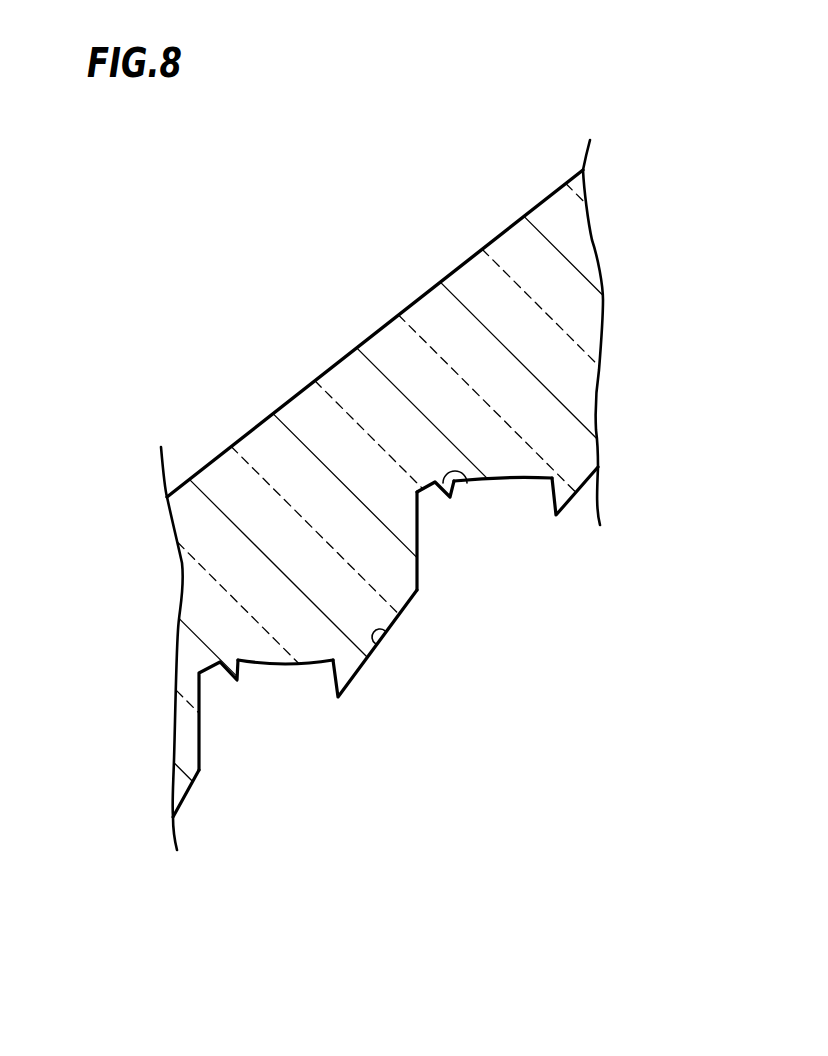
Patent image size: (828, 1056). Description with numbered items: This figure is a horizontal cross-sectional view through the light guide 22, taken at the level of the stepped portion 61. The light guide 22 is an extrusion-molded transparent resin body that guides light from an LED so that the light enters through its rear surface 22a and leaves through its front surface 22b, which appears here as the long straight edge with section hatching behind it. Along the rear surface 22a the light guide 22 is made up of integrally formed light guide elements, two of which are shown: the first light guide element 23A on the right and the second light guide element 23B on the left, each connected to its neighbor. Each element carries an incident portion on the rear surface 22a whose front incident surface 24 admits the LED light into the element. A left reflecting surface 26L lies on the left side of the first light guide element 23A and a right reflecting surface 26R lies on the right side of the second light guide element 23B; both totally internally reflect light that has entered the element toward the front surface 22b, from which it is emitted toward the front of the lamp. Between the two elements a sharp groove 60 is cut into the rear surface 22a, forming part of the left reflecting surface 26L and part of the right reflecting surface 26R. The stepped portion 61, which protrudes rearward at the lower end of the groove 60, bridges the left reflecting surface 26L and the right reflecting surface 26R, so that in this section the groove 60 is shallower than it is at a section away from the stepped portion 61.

The light guide 22 is at (580, 322).
The rear surface 22a is at (188, 812).
The front surface 22b is at (375, 333).
The first light guide element 23A is at (567, 518).
The second light guide element 23B is at (345, 708).
The front incident surface 24 is at (283, 664).
The left reflecting surface 26L is at (467, 484).
The right reflecting surface 26R is at (388, 632).
The groove 60 is at (445, 522).
The stepped portion 61 is at (437, 494).